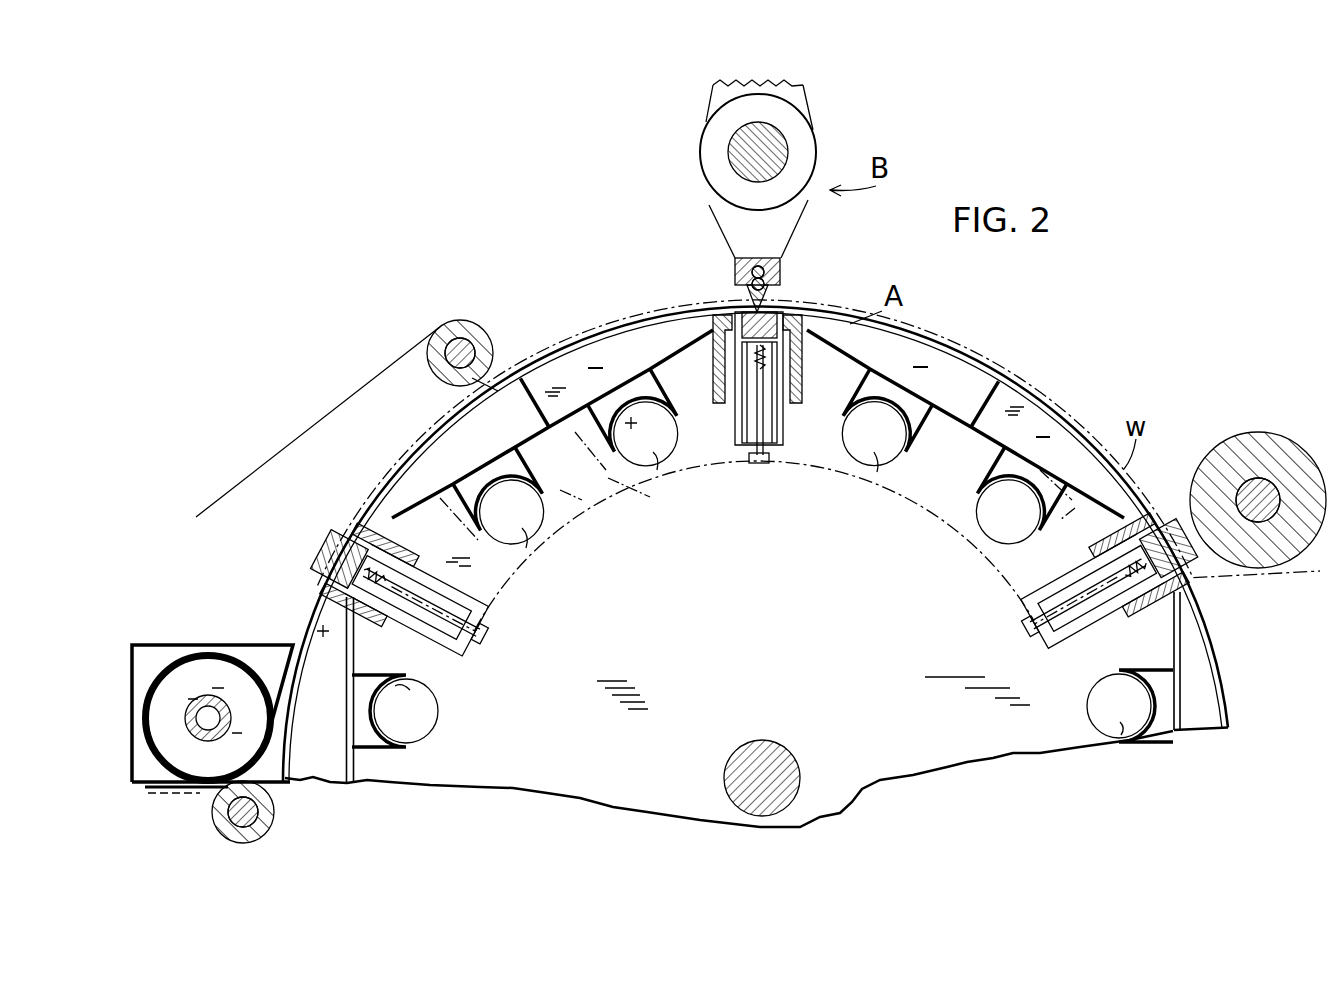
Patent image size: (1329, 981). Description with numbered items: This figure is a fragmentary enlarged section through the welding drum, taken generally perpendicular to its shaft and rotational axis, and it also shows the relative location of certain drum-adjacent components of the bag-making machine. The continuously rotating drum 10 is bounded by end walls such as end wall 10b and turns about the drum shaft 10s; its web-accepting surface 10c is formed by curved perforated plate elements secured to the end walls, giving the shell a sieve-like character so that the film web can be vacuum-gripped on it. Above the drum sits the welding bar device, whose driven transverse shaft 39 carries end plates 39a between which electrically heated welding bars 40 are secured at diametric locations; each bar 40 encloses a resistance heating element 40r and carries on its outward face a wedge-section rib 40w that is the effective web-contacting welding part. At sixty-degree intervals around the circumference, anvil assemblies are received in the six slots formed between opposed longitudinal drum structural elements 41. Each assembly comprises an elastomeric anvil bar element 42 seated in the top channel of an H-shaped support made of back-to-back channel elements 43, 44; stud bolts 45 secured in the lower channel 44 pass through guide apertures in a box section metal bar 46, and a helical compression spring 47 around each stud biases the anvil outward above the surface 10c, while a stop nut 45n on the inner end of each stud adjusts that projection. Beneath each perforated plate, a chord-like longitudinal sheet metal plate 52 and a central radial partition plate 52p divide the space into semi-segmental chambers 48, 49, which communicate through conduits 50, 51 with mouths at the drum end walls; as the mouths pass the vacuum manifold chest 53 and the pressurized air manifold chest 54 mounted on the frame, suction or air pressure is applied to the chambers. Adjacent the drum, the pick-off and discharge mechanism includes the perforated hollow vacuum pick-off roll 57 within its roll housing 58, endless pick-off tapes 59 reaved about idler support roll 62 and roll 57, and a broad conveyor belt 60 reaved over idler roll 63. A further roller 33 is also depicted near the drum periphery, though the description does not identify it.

The drum 10 is at (1249, 695).
The drum end wall 10b is at (807, 680).
The web-accepting drum surface 10c is at (906, 331).
The drum shaft 10s is at (795, 766).
The roller 33 is at (1218, 448).
The driven transverse shaft 39 is at (777, 147).
The end plates 39a is at (797, 105).
The welding bar 40 is at (783, 273).
The resistance heating element 40r is at (735, 273).
The wedge section rib 40w is at (747, 298).
The longitudinal drum structural elements 41 is at (806, 316).
The anvil bar element 42 is at (750, 465).
The upper channel element 43 is at (719, 378).
The lower channel element 44 is at (786, 350).
The stud bolt 45 is at (760, 418).
The stop nut 45n is at (757, 468).
The box section metal bar 46 is at (780, 447).
The helical compression spring 47 is at (745, 382).
The semi-segmental chamber 48 is at (612, 343).
The semi-segmental chamber 49 is at (478, 430).
The conduit 50 is at (645, 458).
The conduit 51 is at (522, 531).
The longitudinal sheet metal plate 52 is at (557, 431).
The radial partition plate 52p is at (524, 378).
The vacuum manifold chest 53 is at (908, 500).
The pressurized air manifold chest 54 is at (585, 549).
The vacuum pick-off roll 57 is at (246, 667).
The roll housing 58 is at (191, 645).
The pick-off tapes 59 is at (352, 405).
The conveyor belt 60 is at (198, 795).
The idler support roll 62 is at (443, 341).
The idler roll 63 is at (275, 830).